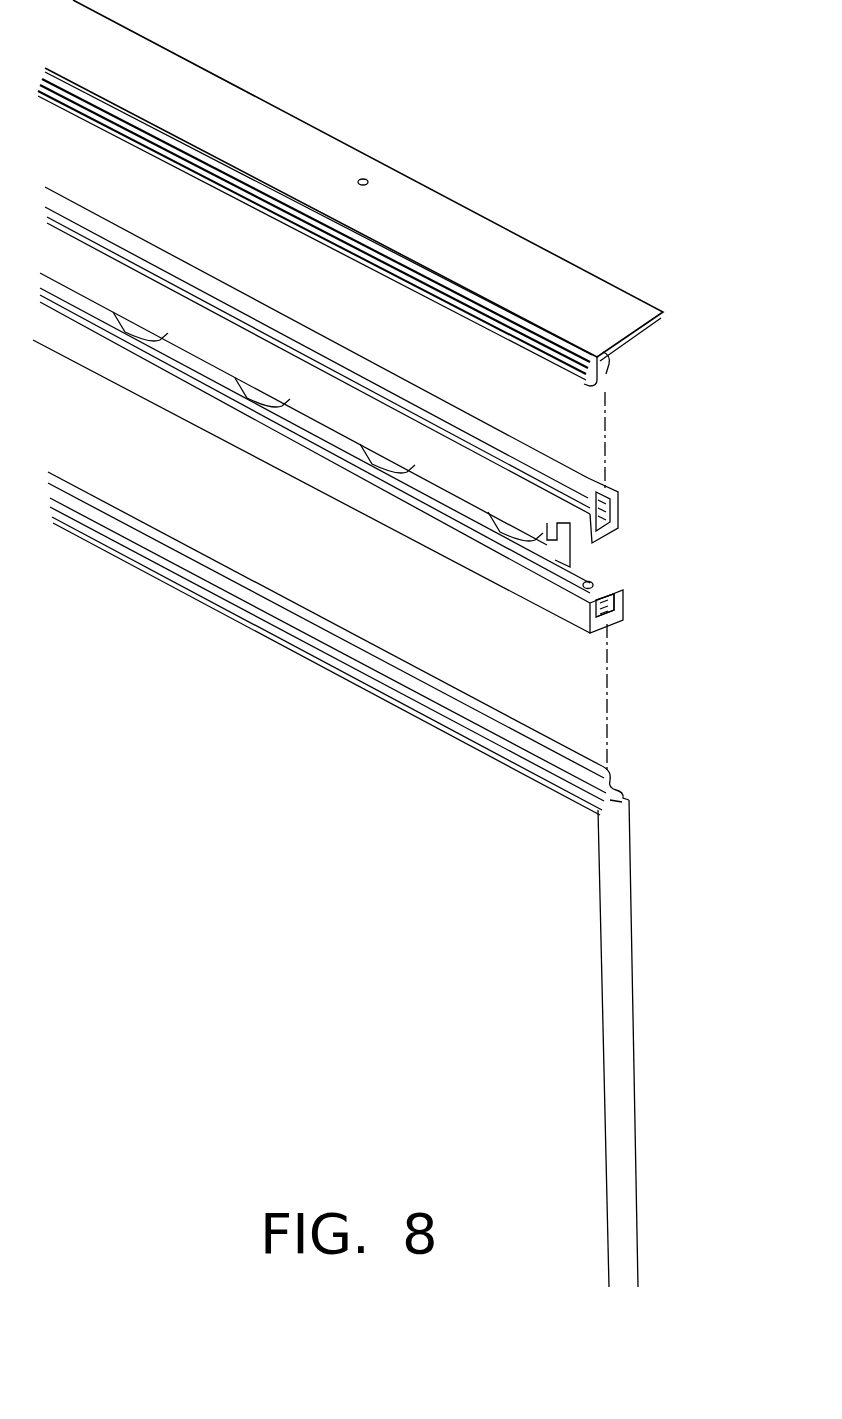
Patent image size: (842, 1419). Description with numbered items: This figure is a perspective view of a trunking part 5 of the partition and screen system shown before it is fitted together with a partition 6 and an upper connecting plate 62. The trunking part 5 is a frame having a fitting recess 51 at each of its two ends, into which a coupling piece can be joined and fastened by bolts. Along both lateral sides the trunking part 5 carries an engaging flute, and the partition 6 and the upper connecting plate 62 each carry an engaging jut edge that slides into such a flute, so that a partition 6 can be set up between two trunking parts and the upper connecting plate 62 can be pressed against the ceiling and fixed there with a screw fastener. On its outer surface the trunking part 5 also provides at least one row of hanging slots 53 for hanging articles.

The trunking part 5 is at (413, 516).
The fitting recess 51 is at (590, 553).
The hanging slots 53 is at (510, 545).
The partition 6 is at (618, 988).
The upper connecting plate 62 is at (623, 297).